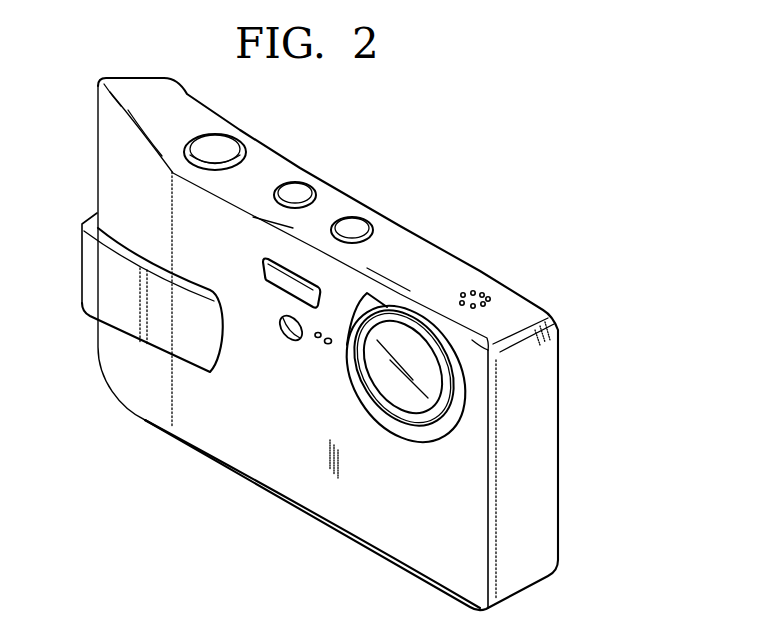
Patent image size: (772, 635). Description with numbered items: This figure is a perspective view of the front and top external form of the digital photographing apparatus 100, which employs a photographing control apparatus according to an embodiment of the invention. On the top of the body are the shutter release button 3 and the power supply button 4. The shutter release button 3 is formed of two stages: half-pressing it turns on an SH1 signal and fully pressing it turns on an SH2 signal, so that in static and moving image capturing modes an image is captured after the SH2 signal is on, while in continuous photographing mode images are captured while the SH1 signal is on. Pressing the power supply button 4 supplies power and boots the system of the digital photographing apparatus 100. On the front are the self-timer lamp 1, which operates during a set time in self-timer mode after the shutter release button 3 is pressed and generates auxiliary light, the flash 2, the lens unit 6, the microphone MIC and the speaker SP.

The digital photographing apparatus 100 is at (438, 170).
The shutter release button 3 is at (224, 143).
The power supply button 4 is at (304, 186).
The speaker SP is at (482, 294).
The flash 2 is at (283, 277).
The self-timer lamp 1 is at (290, 341).
The microphone MIC is at (328, 344).
The lens unit 6 is at (413, 397).